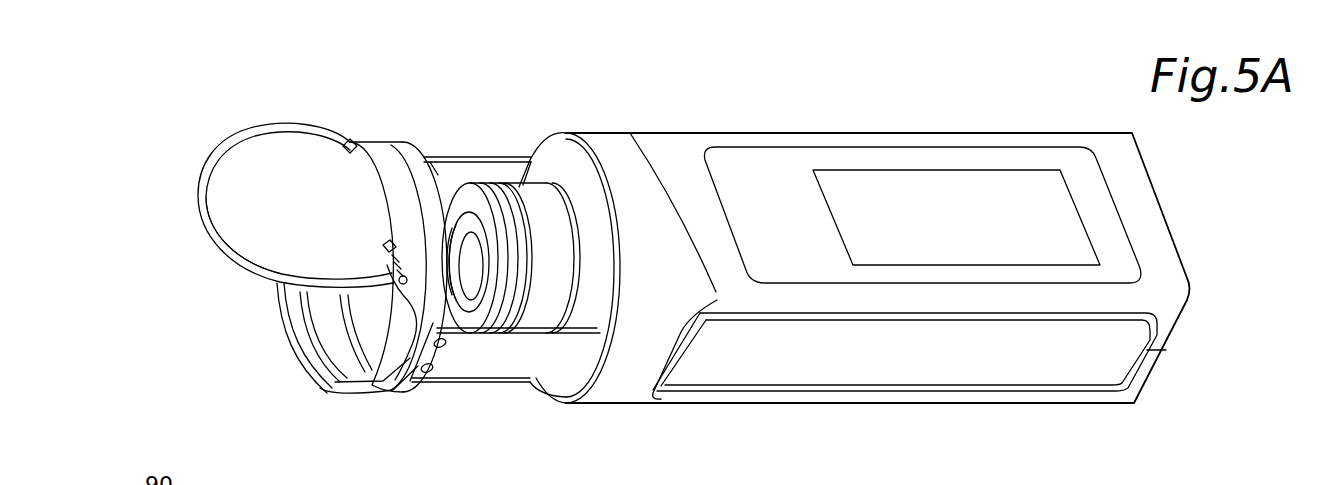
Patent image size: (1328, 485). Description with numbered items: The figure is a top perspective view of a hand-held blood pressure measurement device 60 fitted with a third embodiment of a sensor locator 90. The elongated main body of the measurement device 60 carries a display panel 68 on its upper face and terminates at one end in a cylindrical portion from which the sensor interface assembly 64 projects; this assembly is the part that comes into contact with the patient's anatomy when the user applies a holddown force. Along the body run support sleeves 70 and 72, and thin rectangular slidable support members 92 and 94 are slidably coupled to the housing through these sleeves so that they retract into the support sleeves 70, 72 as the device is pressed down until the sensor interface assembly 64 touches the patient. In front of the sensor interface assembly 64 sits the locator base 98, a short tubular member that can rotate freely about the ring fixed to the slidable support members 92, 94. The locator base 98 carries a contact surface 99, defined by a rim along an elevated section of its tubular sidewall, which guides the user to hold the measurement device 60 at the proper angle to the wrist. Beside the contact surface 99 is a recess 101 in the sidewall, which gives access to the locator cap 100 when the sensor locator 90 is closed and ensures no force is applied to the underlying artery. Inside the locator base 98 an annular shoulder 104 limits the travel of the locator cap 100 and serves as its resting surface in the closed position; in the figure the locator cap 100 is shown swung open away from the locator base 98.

The blood pressure measurement device 60 is at (1188, 343).
The sensor interface assembly 64 is at (565, 267).
The display panel 68 is at (986, 250).
The support sleeve 70 is at (937, 405).
The support sleeve 72 is at (799, 132).
The sensor locator 90 is at (258, 223).
The slidable support member 92 is at (543, 355).
The slidable support member 94 is at (480, 155).
The locator base 98 is at (434, 238).
The contact surface 99 is at (303, 375).
The locator cap 100 is at (277, 160).
The recess 101 is at (405, 345).
The annular shoulder 104 is at (353, 374).